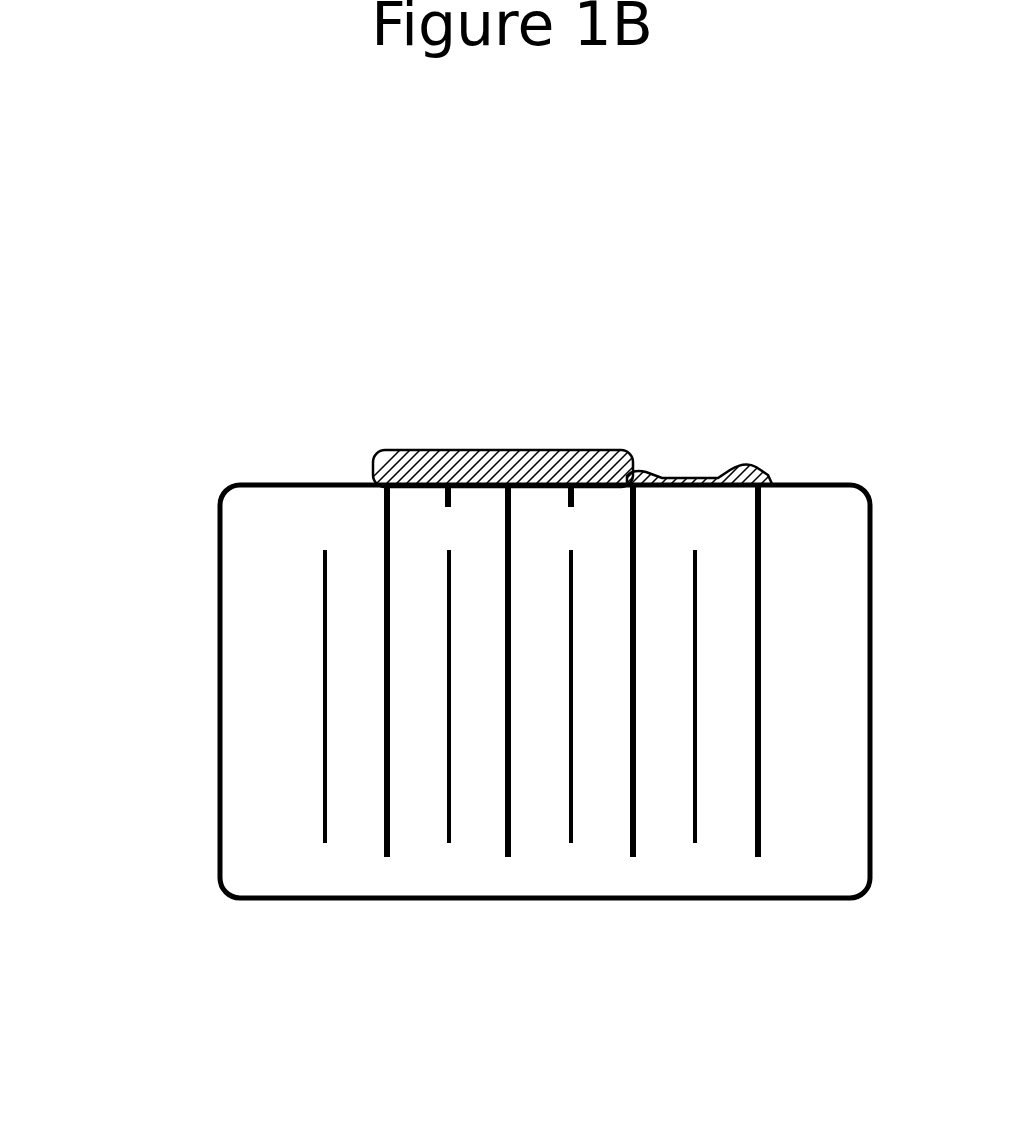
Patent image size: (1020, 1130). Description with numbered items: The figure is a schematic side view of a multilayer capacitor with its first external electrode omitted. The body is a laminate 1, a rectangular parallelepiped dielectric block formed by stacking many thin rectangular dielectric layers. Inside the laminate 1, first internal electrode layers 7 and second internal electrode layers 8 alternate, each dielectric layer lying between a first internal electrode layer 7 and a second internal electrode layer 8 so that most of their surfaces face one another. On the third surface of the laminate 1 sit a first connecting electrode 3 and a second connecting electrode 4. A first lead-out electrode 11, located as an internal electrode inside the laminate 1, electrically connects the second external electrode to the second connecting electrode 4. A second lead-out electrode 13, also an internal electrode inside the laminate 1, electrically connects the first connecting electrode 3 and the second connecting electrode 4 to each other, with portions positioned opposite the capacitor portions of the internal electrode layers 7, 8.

The laminate 1 is at (219, 755).
The first connecting electrode 3 is at (492, 450).
The second connecting electrode 4 is at (755, 465).
The first internal electrode layers 7 is at (458, 834).
The second internal electrode layers 8 is at (392, 836).
The first lead-out electrode 11 is at (765, 843).
The second lead-out electrode 13 is at (638, 842).